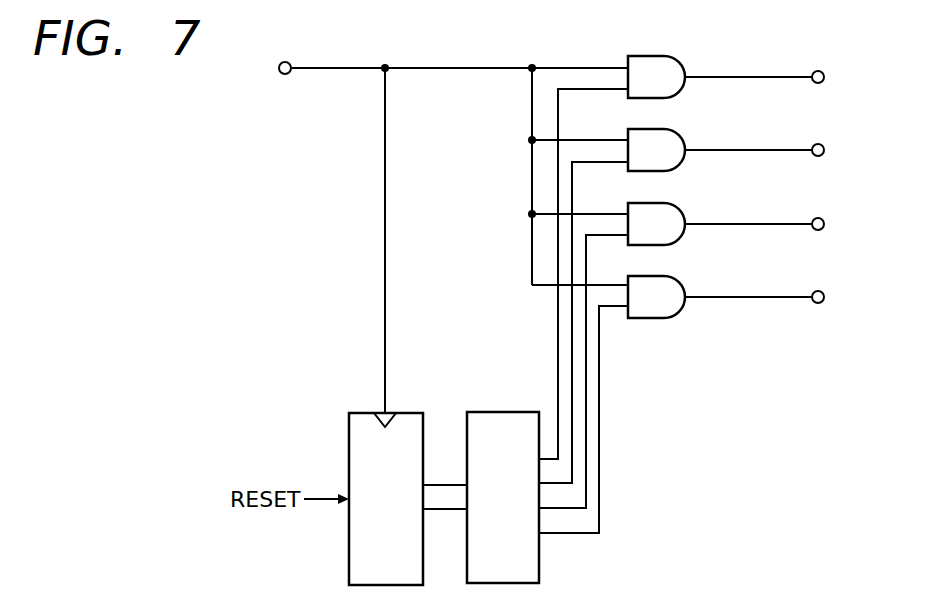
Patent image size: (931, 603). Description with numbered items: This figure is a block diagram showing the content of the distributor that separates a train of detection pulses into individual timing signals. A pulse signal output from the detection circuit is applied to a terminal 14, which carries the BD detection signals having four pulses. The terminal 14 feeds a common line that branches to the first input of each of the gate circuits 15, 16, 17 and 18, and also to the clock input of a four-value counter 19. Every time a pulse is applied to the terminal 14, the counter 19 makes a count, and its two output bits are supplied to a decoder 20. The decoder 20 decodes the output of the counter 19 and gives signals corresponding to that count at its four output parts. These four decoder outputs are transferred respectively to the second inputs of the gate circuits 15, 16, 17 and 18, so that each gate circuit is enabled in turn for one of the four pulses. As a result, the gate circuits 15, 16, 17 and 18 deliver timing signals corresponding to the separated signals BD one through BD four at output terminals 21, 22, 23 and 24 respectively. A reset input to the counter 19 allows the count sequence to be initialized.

The terminal 14 is at (290, 63).
The gate circuit 15 is at (682, 63).
The gate circuit 16 is at (682, 138).
The gate circuit 17 is at (682, 209).
The gate circuit 18 is at (682, 283).
The four-value counter 19 is at (365, 412).
The decoder 20 is at (515, 411).
The output terminal 21 is at (824, 71).
The output terminal 22 is at (824, 144).
The output terminal 23 is at (824, 218).
The output terminal 24 is at (824, 291).